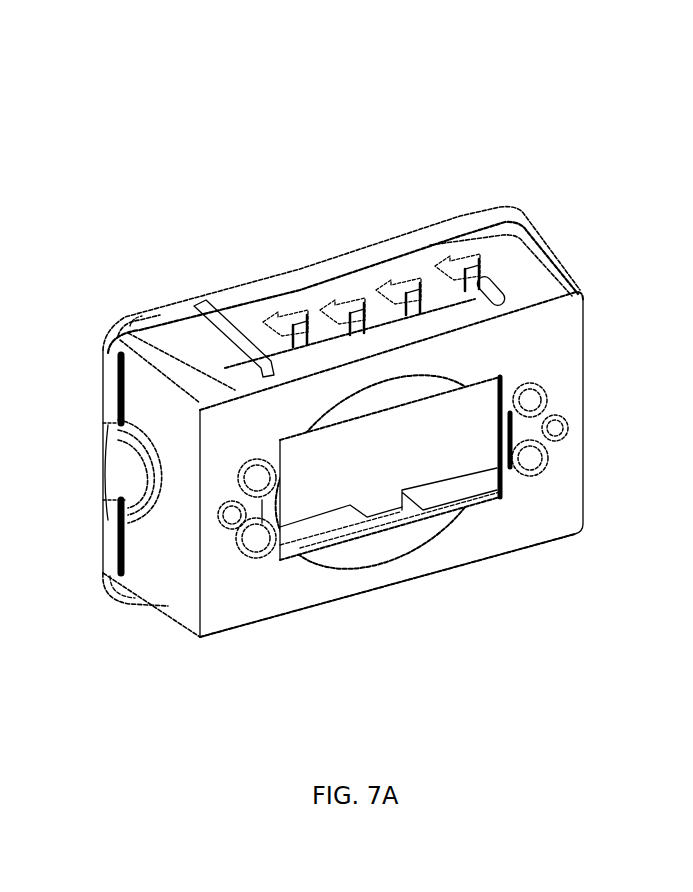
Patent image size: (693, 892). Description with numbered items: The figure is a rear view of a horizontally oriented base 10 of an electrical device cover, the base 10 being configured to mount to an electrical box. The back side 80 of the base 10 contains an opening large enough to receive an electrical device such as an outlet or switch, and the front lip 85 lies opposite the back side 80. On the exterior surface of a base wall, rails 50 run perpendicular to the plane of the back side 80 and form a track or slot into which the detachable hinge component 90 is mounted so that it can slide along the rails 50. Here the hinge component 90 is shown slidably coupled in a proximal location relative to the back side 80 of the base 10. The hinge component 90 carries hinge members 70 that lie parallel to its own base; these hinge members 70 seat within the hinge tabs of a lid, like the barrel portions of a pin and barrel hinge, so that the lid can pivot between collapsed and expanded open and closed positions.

The base 10 is at (207, 362).
The rails 50 is at (484, 283).
The hinge member 70 is at (277, 312).
The back side 80 is at (247, 578).
The front lip 85 is at (325, 258).
The hinge component 90 is at (443, 302).